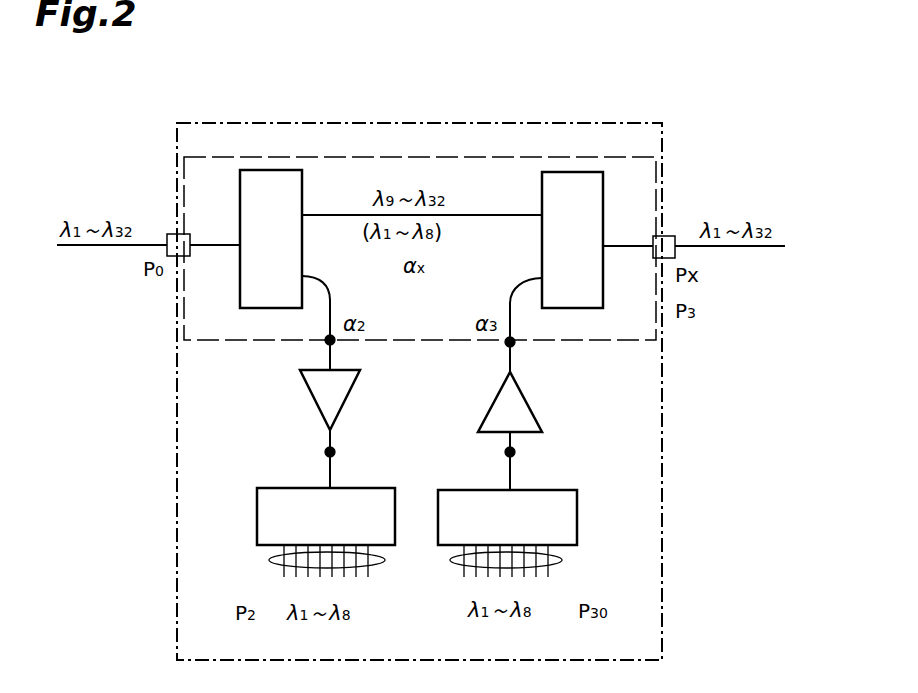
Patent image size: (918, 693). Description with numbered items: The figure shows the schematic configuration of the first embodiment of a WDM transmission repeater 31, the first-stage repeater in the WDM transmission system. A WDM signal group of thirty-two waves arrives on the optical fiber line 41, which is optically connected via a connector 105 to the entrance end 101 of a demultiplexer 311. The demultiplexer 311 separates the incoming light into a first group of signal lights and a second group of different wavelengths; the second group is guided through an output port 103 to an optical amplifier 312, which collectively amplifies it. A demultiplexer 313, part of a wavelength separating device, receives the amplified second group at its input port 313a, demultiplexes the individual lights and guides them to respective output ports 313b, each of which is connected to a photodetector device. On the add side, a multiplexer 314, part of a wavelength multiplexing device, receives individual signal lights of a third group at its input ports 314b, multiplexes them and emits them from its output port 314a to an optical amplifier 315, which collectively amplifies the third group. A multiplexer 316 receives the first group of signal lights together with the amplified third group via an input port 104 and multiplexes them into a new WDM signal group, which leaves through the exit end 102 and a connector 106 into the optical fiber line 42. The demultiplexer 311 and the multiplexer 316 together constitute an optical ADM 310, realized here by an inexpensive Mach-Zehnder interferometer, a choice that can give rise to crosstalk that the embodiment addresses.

The WDM transmission repeater 31 is at (447, 123).
The optical ADM 310 is at (328, 157).
The demultiplexer 311 is at (275, 170).
The multiplexer 316 is at (578, 172).
The entrance end 101 is at (208, 245).
The exit end 102 is at (630, 246).
The connector 105 is at (170, 233).
The connector 106 is at (672, 236).
The optical fiber line 41 is at (80, 248).
The optical fiber line 42 is at (752, 250).
The output port 103 is at (326, 313).
The input port 104 is at (514, 313).
The optical amplifier 312 is at (312, 402).
The optical amplifier 315 is at (530, 404).
The demultiplexer 313 is at (257, 516).
The input port 313a is at (328, 472).
The output ports 313b is at (270, 560).
The multiplexer 314 is at (577, 521).
The output port 314a is at (512, 475).
The input ports 314b is at (565, 560).